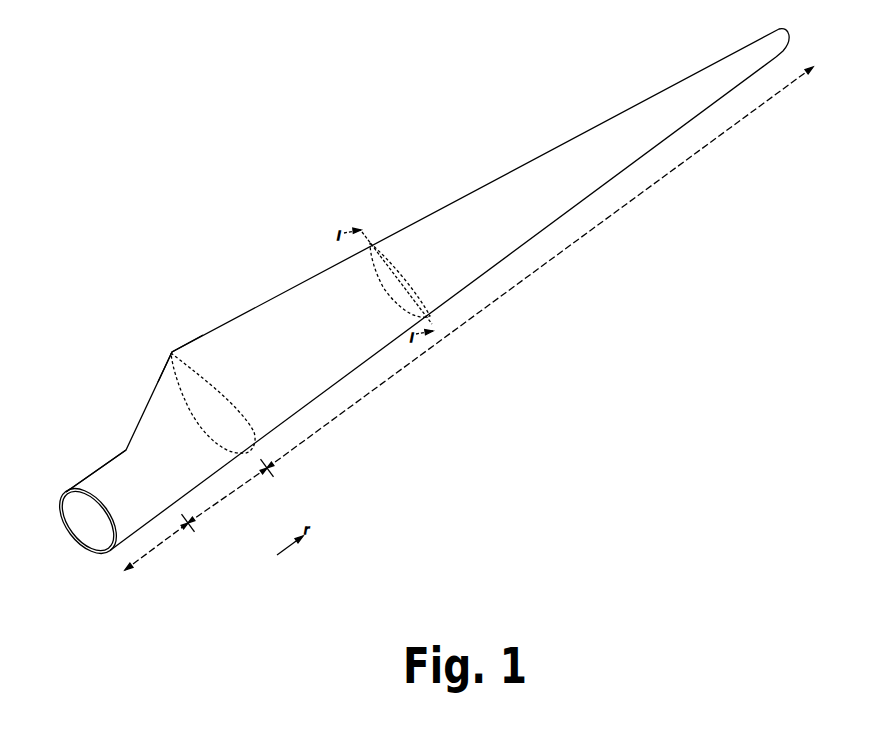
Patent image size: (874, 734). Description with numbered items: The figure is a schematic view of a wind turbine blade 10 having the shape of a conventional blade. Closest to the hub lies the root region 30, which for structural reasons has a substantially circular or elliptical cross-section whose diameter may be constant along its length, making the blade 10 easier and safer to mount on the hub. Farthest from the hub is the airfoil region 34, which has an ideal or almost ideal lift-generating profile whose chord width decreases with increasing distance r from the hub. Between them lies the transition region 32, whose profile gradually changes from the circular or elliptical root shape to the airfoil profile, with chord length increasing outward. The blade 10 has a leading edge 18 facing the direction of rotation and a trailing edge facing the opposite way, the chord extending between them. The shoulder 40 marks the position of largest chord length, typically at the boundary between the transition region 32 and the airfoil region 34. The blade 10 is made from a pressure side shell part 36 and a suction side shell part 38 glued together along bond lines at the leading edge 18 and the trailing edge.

The wind turbine blade 10 is at (296, 198).
The leading edge 18 is at (565, 215).
The root region 30 is at (155, 548).
The transition region 32 is at (230, 494).
The airfoil region 34 is at (487, 306).
The pressure side shell part 36 is at (84, 478).
The suction side shell part 38 is at (60, 500).
The shoulder 40 is at (174, 350).